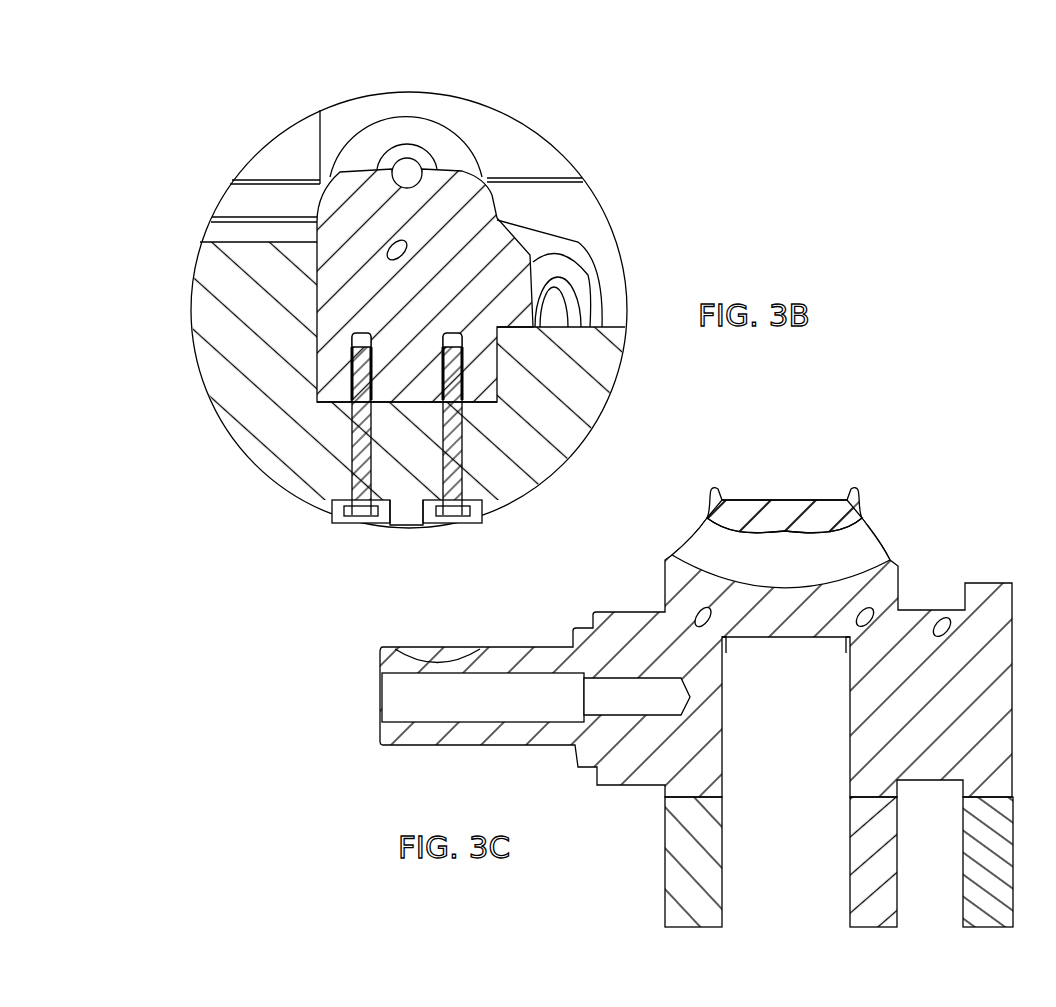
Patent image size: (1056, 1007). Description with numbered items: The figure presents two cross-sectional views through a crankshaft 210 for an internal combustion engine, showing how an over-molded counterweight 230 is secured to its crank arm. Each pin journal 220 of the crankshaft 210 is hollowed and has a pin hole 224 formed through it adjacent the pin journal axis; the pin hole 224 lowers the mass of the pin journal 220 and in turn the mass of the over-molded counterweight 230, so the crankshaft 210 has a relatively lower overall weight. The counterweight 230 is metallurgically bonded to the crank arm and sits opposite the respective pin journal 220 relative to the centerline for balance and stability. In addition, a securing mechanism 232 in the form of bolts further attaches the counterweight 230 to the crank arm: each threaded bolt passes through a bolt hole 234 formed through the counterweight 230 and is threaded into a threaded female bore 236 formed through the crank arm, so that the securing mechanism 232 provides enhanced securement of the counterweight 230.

In FIG. 3B, the crankshaft 210 is at (214, 118).
In FIG. 3C, the pin journal 220 is at (785, 508).
In FIG. 3C, the pin hole 224 is at (845, 556).
In FIG. 3B, the over-molded counterweight 230 is at (210, 313).
In FIG. 3C, the over-molded counterweight 230 is at (680, 845).
In FIG. 3B, the securing mechanism 232 is at (345, 506).
In FIG. 3B, the bolt hole 234 is at (421, 525).
In FIG. 3B, the threaded female bore 236 is at (362, 403).